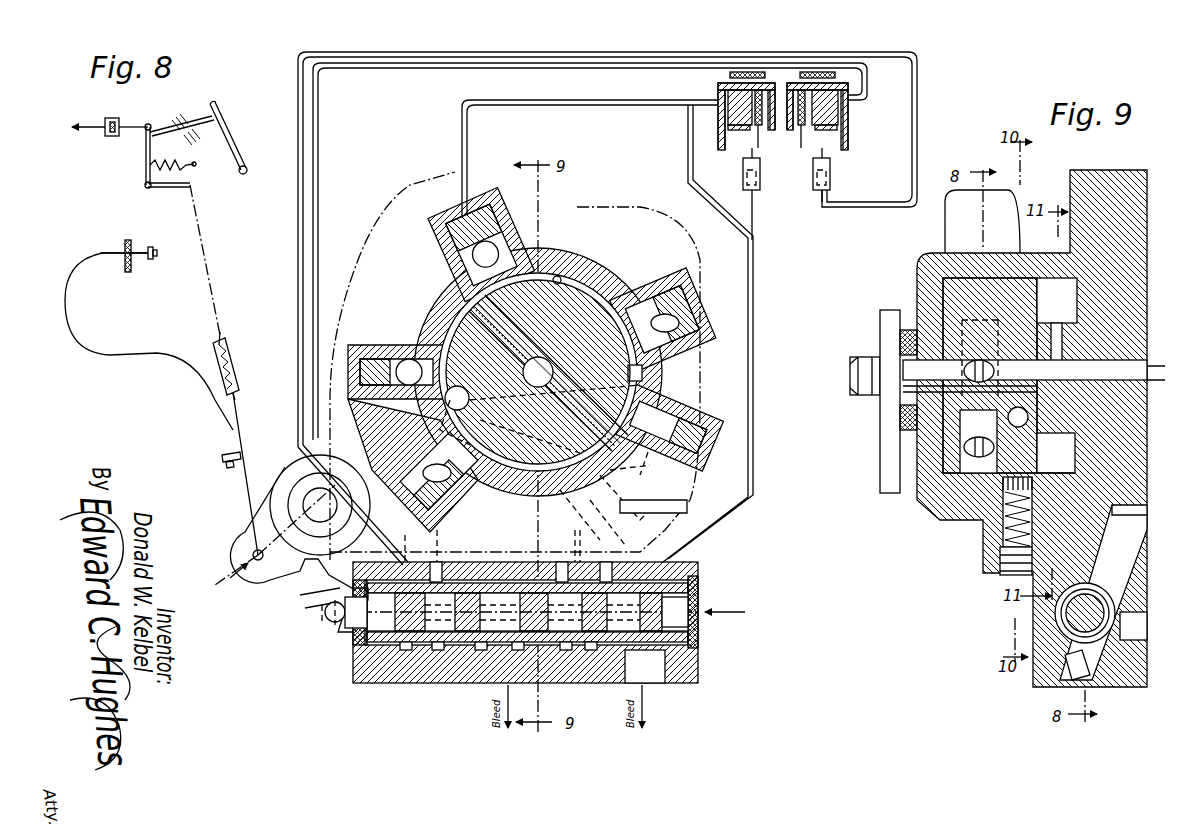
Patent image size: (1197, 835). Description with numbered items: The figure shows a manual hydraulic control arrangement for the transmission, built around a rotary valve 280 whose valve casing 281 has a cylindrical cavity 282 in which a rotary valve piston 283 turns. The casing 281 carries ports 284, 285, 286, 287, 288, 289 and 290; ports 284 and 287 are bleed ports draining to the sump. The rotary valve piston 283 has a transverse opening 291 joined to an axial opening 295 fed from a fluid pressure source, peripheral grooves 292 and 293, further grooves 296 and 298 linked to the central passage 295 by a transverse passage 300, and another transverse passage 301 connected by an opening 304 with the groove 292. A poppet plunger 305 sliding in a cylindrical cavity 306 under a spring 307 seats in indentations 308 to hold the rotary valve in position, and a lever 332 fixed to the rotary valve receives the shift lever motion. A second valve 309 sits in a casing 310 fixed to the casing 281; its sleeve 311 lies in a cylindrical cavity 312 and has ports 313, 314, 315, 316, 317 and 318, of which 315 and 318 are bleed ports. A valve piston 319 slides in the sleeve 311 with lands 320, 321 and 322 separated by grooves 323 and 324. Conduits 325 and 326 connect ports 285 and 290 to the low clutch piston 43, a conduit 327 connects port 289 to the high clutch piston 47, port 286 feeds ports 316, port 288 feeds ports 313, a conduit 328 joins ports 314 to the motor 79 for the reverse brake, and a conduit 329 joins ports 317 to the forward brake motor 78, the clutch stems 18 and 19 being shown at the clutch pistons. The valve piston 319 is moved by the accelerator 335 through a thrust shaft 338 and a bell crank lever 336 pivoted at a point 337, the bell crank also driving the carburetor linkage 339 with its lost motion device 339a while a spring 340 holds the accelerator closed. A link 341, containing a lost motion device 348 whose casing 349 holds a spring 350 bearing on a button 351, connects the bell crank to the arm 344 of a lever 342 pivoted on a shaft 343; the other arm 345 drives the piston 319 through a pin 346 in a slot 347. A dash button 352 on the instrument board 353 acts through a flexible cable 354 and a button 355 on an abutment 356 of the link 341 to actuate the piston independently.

In FIG. 8, the low clutch piston stem 18 is at (762, 135).
In FIG. 8, the high clutch piston stem 19 is at (797, 140).
In FIG. 8, the low clutch piston 43 is at (735, 108).
In FIG. 8, the high clutch piston 47 is at (828, 92).
In FIG. 8, the forward brake motor 78 is at (765, 190).
In FIG. 8, the motor 79 is at (832, 190).
In FIG. 8, the rotary valve 280 is at (572, 205).
In FIG. 8, the valve casing 281 is at (625, 300).
In FIG. 8, the cylindrical cavity 282 is at (557, 276).
In FIG. 8, the rotary valve piston 283 is at (598, 280).
In FIG. 8, the port 284 is at (705, 290).
In FIG. 8, the port 285 is at (705, 462).
In FIG. 8, the port 286 is at (645, 505).
In FIG. 9, the port 286 is at (1142, 512).
In FIG. 8, the port 287 is at (440, 515).
In FIG. 9, the port 287 is at (979, 437).
In FIG. 8, the port 288 is at (380, 432).
In FIG. 8, the port 289 is at (348, 355).
In FIG. 8, the port 290 is at (455, 205).
In FIG. 8, the transverse opening 291 is at (470, 312).
In FIG. 9, the transverse opening 291 is at (995, 378).
In FIG. 8, the peripheral groove 292 is at (548, 458).
In FIG. 9, the peripheral groove 292 is at (948, 500).
In FIG. 8, the peripheral groove 293 is at (640, 368).
In FIG. 8, the axial opening 295 is at (552, 368).
In FIG. 9, the axial opening 295 is at (1145, 370).
In FIG. 9, the groove 296 is at (1080, 300).
In FIG. 9, the groove 298 is at (1070, 449).
In FIG. 9, the transverse passage 300 is at (1062, 340).
In FIG. 8, the transverse passage 301 is at (483, 416).
In FIG. 9, the transverse passage 301 is at (1018, 417).
In FIG. 8, the opening 304 is at (458, 388).
In FIG. 9, the plunger 305 is at (1005, 500).
In FIG. 9, the cylindrical cavity 306 is at (1005, 540).
In FIG. 9, the spring 307 is at (1010, 555).
In FIG. 9, the indentation 308 is at (1025, 485).
In FIG. 8, the valve 309 is at (743, 612).
In FIG. 8, the casing 310 is at (698, 668).
In FIG. 9, the casing 310 is at (1143, 580).
In FIG. 8, the sleeve 311 is at (692, 640).
In FIG. 8, the cylindrical cavity 312 is at (695, 584).
In FIG. 8, the port 313 is at (435, 660).
In FIG. 8, the port 314 is at (478, 660).
In FIG. 8, the port 315 is at (518, 660).
In FIG. 8, the port 316 is at (565, 660).
In FIG. 9, the port 316 is at (1090, 660).
In FIG. 8, the port 317 is at (590, 660).
In FIG. 8, the port 318 is at (645, 665).
In FIG. 8, the valve piston 319 is at (358, 645).
In FIG. 8, the land 320 is at (405, 660).
In FIG. 8, the land 321 is at (540, 600).
In FIG. 9, the land 321 is at (1115, 616).
In FIG. 8, the land 322 is at (678, 598).
In FIG. 8, the groove 323 is at (480, 600).
In FIG. 8, the groove 324 is at (608, 600).
In FIG. 8, the conduit 325 is at (688, 140).
In FIG. 8, the conduit 326 is at (527, 102).
In FIG. 8, the conduit 327 is at (318, 117).
In FIG. 8, the conduit 328 is at (298, 157).
In FIG. 9, the conduit 328 is at (1142, 636).
In FIG. 8, the conduit 329 is at (754, 300).
In FIG. 9, the lever 332 is at (880, 445).
In FIG. 8, the accelerator 335 is at (235, 125).
In FIG. 8, the bell crank lever 336 is at (146, 157).
In FIG. 8, the pivot point 337 is at (150, 188).
In FIG. 8, the thrust shaft 338 is at (200, 110).
In FIG. 8, the linkage 339 is at (112, 117).
In FIG. 8, the lost motion device 339a is at (120, 118).
In FIG. 8, the spring 340 is at (192, 167).
In FIG. 8, the link 341 is at (205, 243).
In FIG. 8, the lever 342 is at (280, 580).
In FIG. 8, the shaft 343 is at (300, 520).
In FIG. 8, the arm 344 is at (262, 525).
In FIG. 8, the arm 345 is at (318, 612).
In FIG. 8, the pin 346 is at (325, 622).
In FIG. 8, the slot 347 is at (345, 628).
In FIG. 8, the lost motion device 348 is at (232, 340).
In FIG. 8, the casing 349 is at (235, 365).
In FIG. 8, the spring 350 is at (215, 355).
In FIG. 8, the button 351 is at (235, 392).
In FIG. 8, the button 352 is at (157, 252).
In FIG. 8, the instrument board 353 is at (128, 272).
In FIG. 8, the flexible cable 354 is at (157, 355).
In FIG. 8, the button 355 is at (226, 466).
In FIG. 8, the abutment 356 is at (240, 455).